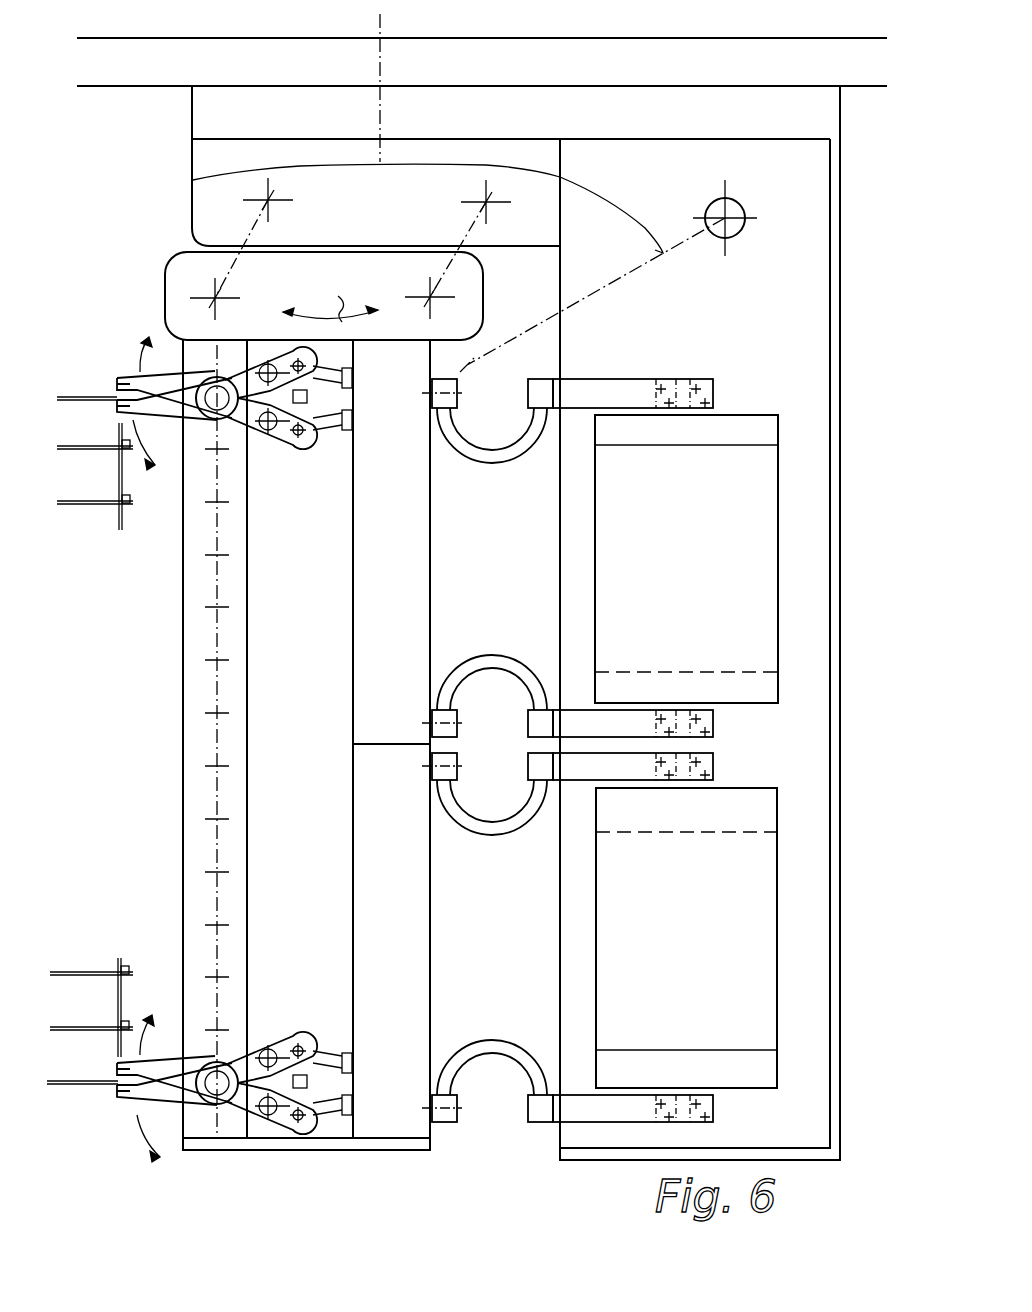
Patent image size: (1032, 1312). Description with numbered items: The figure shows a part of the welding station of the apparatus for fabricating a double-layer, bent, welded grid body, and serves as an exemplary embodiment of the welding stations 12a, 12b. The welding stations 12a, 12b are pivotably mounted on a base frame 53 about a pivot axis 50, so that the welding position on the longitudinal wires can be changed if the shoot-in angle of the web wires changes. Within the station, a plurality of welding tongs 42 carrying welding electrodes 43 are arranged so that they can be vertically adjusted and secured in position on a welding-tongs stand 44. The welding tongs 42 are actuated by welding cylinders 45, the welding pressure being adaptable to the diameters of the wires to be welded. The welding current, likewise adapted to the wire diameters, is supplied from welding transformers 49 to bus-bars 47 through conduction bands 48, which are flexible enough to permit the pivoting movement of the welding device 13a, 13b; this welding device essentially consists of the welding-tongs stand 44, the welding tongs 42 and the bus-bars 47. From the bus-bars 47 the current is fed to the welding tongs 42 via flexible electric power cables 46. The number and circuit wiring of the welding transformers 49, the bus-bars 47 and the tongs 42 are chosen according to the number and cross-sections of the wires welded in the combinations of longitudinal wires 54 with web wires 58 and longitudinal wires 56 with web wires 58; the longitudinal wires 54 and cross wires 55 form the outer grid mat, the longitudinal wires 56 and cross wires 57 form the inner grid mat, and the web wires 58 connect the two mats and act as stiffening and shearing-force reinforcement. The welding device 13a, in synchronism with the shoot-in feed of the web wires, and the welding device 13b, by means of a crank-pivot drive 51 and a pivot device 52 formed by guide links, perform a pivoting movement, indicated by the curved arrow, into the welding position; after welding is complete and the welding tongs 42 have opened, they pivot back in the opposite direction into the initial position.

The pivot axis 50 is at (383, 22).
The base frame 53 is at (632, 66).
The pivot device 52 is at (245, 238).
The crank-pivot drive 51 is at (742, 198).
The welding station 12a is at (760, 623).
The welding station 12b is at (783, 365).
The welding tongs 42 is at (173, 383).
The welding electrodes 43 is at (117, 392).
The welding-tongs stand 44 is at (190, 750).
The welding cylinders 45 is at (283, 445).
The flexible electric power cables 46 is at (333, 432).
The bus-bars 47 is at (375, 843).
The conduction bands 48 is at (497, 660).
The welding transformers 49 is at (750, 595).
The longitudinal wires 54 is at (141, 516).
The longitudinal wires 56 is at (133, 491).
The cross wires 55 is at (143, 963).
The cross wires 57 is at (118, 958).
The web wires 58 is at (87, 502).
The welding device 13a is at (254, 1096).
The welding device 13b is at (335, 990).